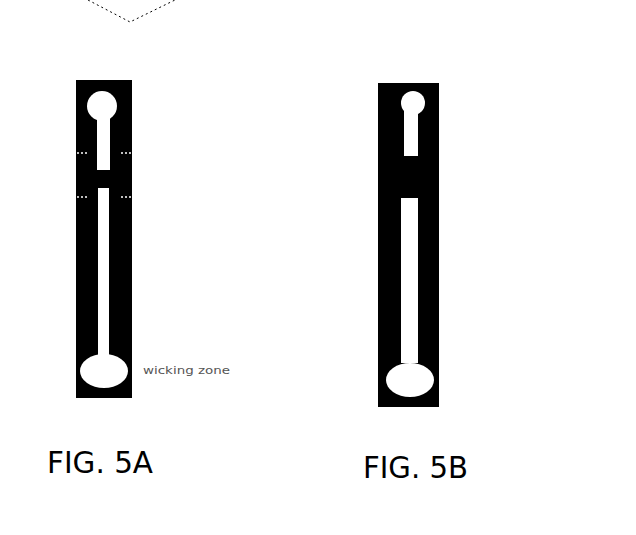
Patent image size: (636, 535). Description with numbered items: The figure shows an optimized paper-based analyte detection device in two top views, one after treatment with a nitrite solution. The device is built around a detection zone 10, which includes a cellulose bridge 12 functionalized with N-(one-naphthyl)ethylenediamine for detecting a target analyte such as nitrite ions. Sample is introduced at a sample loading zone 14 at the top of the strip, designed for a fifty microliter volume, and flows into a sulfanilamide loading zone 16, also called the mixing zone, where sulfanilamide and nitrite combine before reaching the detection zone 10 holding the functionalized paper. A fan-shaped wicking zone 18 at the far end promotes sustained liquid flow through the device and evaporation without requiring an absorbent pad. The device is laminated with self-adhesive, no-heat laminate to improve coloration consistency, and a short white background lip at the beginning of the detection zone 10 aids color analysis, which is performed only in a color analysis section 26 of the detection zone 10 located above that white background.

In FIG. 5B, the detection zone 10 is at (400, 187).
In FIG. 5B, the cellulose bridge 12 is at (405, 188).
In FIG. 5A, the sample loading zone 14 is at (95, 105).
In FIG. 5B, the sample loading zone 14 is at (405, 105).
In FIG. 5A, the sulfanilamide loading zone 16 is at (98, 137).
In FIG. 5B, the sulfanilamide loading zone 16 is at (400, 137).
In FIG. 5A, the wicking zone 18 is at (95, 381).
In FIG. 5B, the wicking zone 18 is at (405, 382).
In FIG. 5B, the color analysis section 26 is at (438, 135).